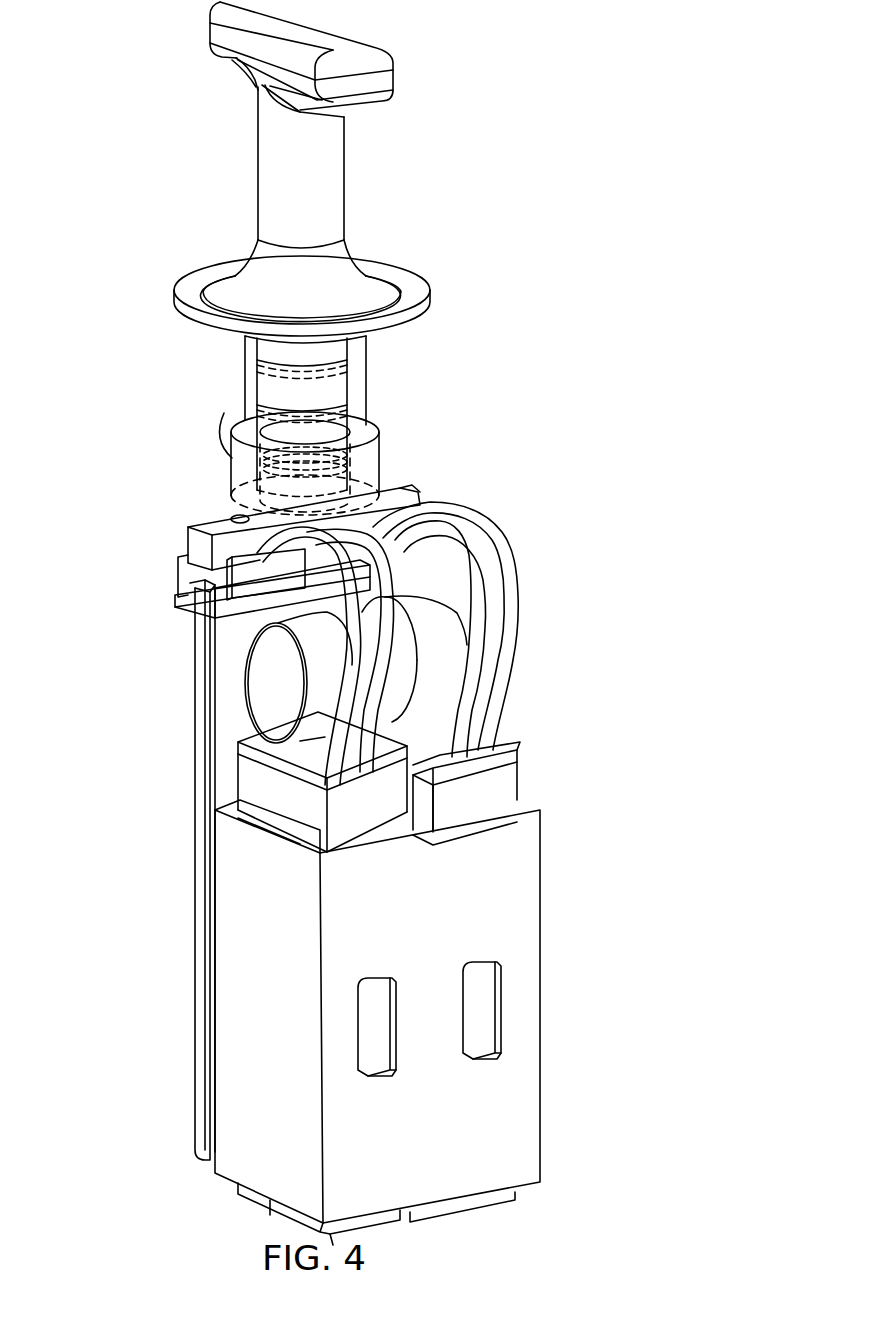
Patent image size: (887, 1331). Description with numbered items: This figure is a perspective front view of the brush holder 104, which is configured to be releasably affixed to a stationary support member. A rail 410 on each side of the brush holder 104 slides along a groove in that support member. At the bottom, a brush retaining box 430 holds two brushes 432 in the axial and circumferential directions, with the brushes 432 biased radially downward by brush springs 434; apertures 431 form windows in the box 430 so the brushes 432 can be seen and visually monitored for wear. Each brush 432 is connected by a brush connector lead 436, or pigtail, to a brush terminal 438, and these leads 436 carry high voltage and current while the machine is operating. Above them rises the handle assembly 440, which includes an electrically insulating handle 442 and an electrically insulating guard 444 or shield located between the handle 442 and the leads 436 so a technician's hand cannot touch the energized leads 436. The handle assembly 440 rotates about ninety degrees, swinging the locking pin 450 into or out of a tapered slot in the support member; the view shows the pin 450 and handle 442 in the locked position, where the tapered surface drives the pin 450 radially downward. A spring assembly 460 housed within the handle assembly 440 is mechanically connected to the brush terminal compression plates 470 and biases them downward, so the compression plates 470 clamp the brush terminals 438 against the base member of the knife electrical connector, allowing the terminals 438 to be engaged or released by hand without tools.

The brush holder 104 is at (488, 74).
The rail 410 is at (195, 882).
The brush retaining box 430 is at (443, 913).
The apertures 431 is at (381, 1083).
The brushes 432 is at (385, 825).
The brush springs 434 is at (268, 686).
The brush connector leads 436 is at (492, 582).
The brush terminals 438 is at (245, 578).
The handle assembly 440 is at (237, 178).
The electrically insulating handle 442 is at (215, 10).
The electrically insulating guard 444 is at (323, 300).
The locking pin 450 is at (224, 413).
The spring assembly 460 is at (370, 460).
The brush terminal compression plate 470 is at (190, 541).